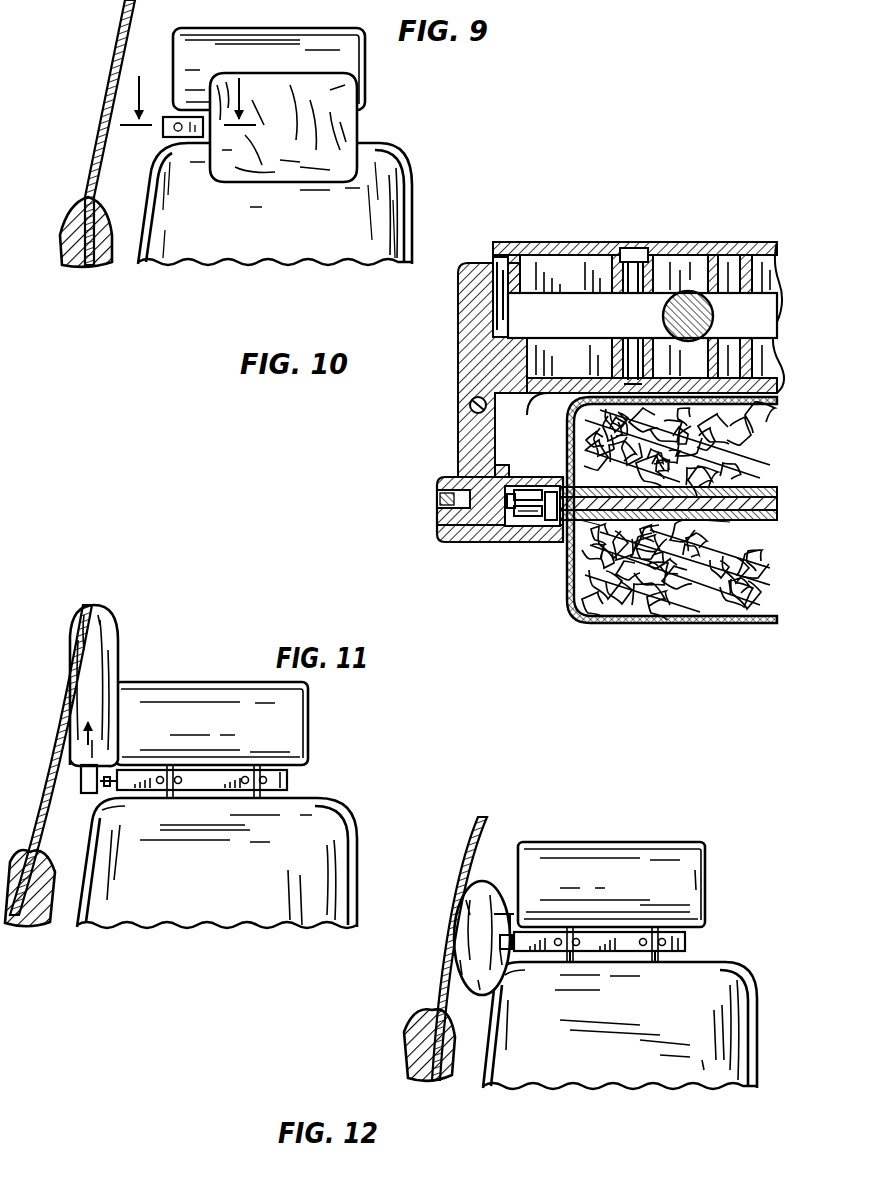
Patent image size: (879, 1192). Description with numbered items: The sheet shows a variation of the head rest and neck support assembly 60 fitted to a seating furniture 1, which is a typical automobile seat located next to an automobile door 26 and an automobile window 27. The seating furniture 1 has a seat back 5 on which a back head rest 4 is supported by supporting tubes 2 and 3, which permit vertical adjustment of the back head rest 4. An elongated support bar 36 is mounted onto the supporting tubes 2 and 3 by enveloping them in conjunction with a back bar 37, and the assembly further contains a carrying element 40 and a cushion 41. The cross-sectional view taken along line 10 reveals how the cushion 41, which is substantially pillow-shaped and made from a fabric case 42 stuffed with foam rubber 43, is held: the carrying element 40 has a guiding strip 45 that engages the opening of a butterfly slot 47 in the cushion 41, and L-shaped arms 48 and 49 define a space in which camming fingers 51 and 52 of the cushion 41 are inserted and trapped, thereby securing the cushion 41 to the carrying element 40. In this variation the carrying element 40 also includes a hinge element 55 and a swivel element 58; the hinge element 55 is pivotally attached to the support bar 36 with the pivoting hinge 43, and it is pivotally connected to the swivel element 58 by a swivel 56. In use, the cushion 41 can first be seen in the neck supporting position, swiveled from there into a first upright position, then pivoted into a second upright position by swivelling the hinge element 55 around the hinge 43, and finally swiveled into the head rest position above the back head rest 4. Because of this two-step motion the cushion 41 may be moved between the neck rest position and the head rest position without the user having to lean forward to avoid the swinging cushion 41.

In FIG. 9, the seating furniture 1 is at (416, 223).
In FIG. 11, the seating furniture 1 is at (358, 880).
In FIG. 12, the seating furniture 1 is at (758, 1002).
In FIG. 10, the supporting tube 2 is at (684, 292).
In FIG. 12, the supporting tube 2 is at (580, 952).
In FIG. 12, the supporting tube 3 is at (656, 960).
In FIG. 9, the back head rest 4 is at (300, 34).
In FIG. 11, the back head rest 4 is at (205, 698).
In FIG. 12, the back head rest 4 is at (618, 858).
In FIG. 9, the seat back 5 is at (395, 188).
In FIG. 11, the seat back 5 is at (325, 838).
In FIG. 12, the seat back 5 is at (724, 975).
In FIG. 9, the section line 10 is at (186, 86).
In FIG. 9, the automobile door 26 is at (96, 216).
In FIG. 11, the automobile door 26 is at (16, 918).
In FIG. 12, the automobile door 26 is at (406, 1032).
In FIG. 9, the automobile window 27 is at (103, 118).
In FIG. 11, the automobile window 27 is at (70, 692).
In FIG. 12, the automobile window 27 is at (437, 978).
In FIG. 10, the elongated support bar 36 is at (766, 343).
In FIG. 11, the elongated support bar 36 is at (290, 782).
In FIG. 12, the elongated support bar 36 is at (590, 930).
In FIG. 10, the back bar 37 is at (764, 242).
In FIG. 9, the carrying element 40 is at (162, 130).
In FIG. 10, the carrying element 40 is at (465, 543).
In FIG. 11, the carrying element 40 is at (82, 790).
In FIG. 9, the cushion 41 is at (310, 92).
In FIG. 10, the cushion 41 is at (650, 618).
In FIG. 11, the cushion 41 is at (108, 614).
In FIG. 12, the cushion 41 is at (480, 887).
In FIG. 10, the fabric case 42 is at (712, 624).
In FIG. 10, the pivoting hinge 43 is at (470, 403).
In FIG. 10, the guiding strip 45 is at (770, 516).
In FIG. 10, the butterfly slot 47 is at (770, 489).
In FIG. 10, the L-shaped arm 48 is at (546, 542).
In FIG. 10, the L-shaped arm 49 is at (535, 490).
In FIG. 10, the camming finger 51 is at (516, 542).
In FIG. 10, the camming finger 52 is at (514, 490).
In FIG. 10, the hinge element 55 is at (460, 457).
In FIG. 11, the hinge element 55 is at (114, 792).
In FIG. 12, the hinge element 55 is at (514, 964).
In FIG. 10, the swivel 56 is at (437, 497).
In FIG. 10, the swivel element 58 is at (437, 530).
In FIG. 9, the head rest and neck support assembly 60 is at (322, 114).
In FIG. 10, the head rest and neck support assembly 60 is at (656, 536).
In FIG. 11, the head rest and neck support assembly 60 is at (125, 671).
In FIG. 12, the head rest and neck support assembly 60 is at (603, 914).